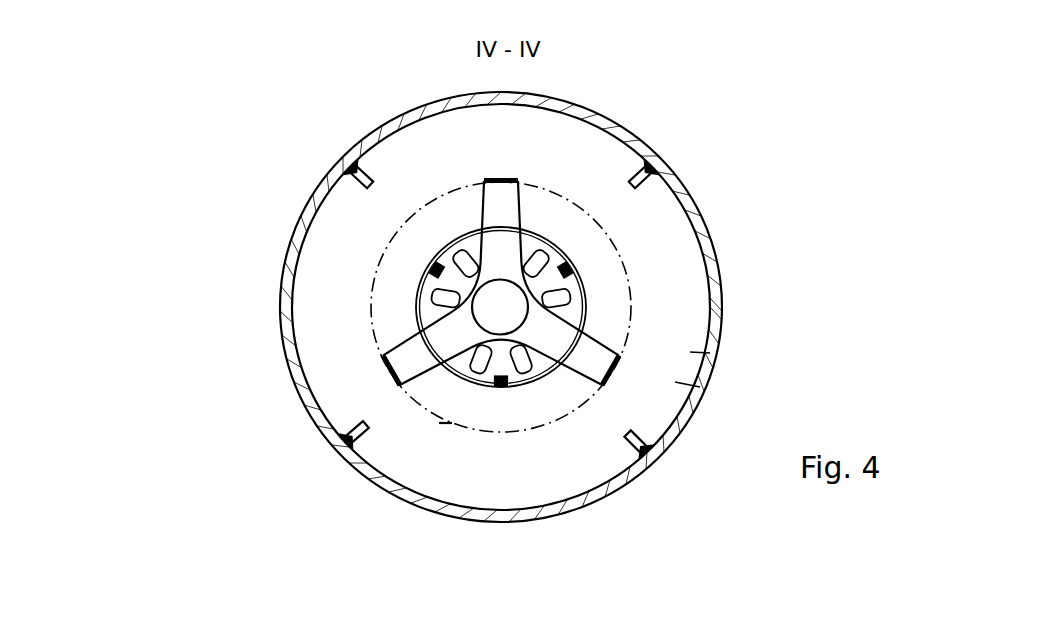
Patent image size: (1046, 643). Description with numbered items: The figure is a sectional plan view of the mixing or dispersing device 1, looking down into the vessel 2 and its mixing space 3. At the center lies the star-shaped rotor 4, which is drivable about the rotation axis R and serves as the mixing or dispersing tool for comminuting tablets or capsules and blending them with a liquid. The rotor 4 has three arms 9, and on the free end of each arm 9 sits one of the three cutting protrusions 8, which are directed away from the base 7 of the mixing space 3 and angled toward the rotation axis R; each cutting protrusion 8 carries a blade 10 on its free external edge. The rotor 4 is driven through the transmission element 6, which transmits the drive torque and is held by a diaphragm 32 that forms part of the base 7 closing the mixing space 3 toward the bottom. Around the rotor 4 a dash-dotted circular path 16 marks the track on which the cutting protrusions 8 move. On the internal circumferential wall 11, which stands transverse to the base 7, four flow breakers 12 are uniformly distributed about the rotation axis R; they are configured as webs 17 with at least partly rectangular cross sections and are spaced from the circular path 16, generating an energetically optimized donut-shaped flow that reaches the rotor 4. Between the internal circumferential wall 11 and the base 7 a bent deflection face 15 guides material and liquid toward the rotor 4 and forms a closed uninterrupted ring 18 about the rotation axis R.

The mixing or dispersing device 1 is at (158, 161).
The vessel 2 is at (697, 198).
The mixing space 3 is at (700, 291).
The rotor 4 is at (472, 332).
The transmission element 6 is at (410, 308).
The base 7 is at (645, 278).
The cutting protrusions 8 is at (495, 182).
The arms 9 is at (495, 234).
The blade 10 is at (484, 182).
The internal circumferential wall 11 is at (293, 252).
The flow breakers 12 is at (360, 166).
The deflection face 15 is at (710, 353).
The circular path 16 is at (445, 423).
The webs 17 is at (347, 169).
The ring 18 is at (700, 387).
The diaphragm 32 is at (520, 353).
The rotation axis R is at (500, 307).